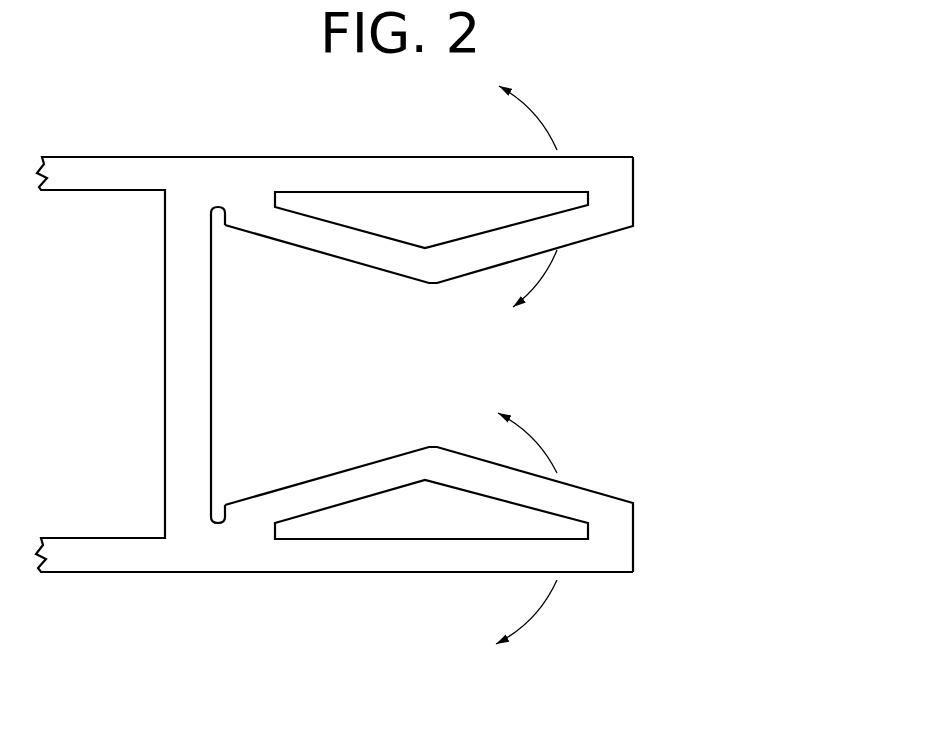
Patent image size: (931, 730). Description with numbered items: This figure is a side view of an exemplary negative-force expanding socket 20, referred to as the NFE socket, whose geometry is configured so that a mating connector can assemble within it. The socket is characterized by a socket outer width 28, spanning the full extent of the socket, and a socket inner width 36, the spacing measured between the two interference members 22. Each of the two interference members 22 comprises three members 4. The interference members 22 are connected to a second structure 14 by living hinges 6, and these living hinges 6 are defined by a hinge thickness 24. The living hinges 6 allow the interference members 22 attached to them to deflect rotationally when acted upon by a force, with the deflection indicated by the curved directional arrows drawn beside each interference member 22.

The members 4 is at (451, 191).
The living hinges 6 is at (219, 229).
The second structure 14 is at (152, 458).
The negative-force expanding socket 20 is at (385, 355).
The interference members 22 is at (658, 157).
The hinge thickness 24 is at (198, 245).
The socket outer width 28 is at (781, 157).
The socket inner width 36 is at (466, 283).